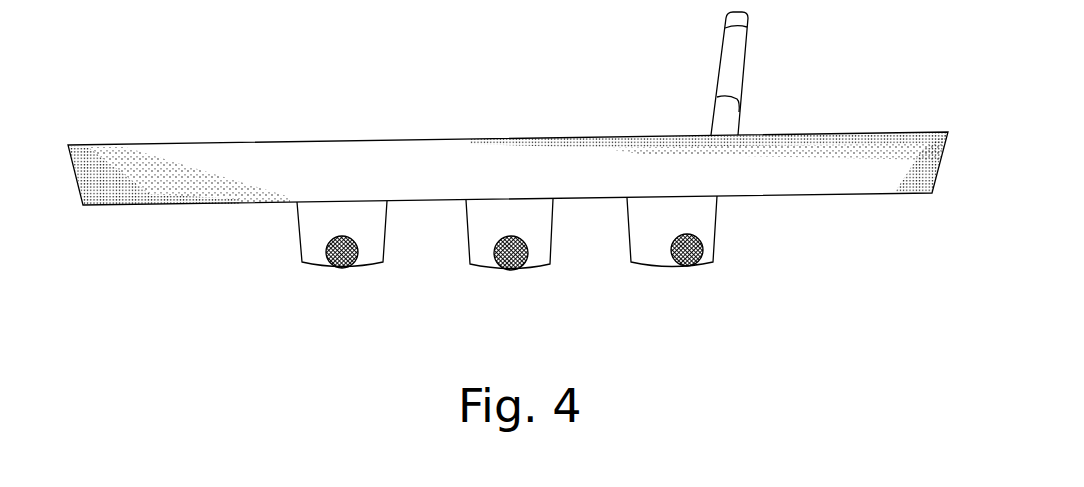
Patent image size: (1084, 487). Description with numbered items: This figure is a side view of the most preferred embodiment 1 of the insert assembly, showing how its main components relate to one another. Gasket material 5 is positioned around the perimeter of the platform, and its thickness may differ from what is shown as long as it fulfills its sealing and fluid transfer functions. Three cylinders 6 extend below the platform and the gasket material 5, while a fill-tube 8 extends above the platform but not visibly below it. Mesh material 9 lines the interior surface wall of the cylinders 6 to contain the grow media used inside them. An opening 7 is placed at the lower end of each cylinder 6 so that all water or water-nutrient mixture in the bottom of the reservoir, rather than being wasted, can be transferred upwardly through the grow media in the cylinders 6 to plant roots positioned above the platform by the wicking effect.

The insert assembly 1 is at (393, 120).
The gasket material 5 is at (148, 177).
The cylinders 6 is at (315, 228).
The opening 7 is at (703, 240).
The fill-tube 8 is at (735, 62).
The mesh material 9 is at (518, 268).